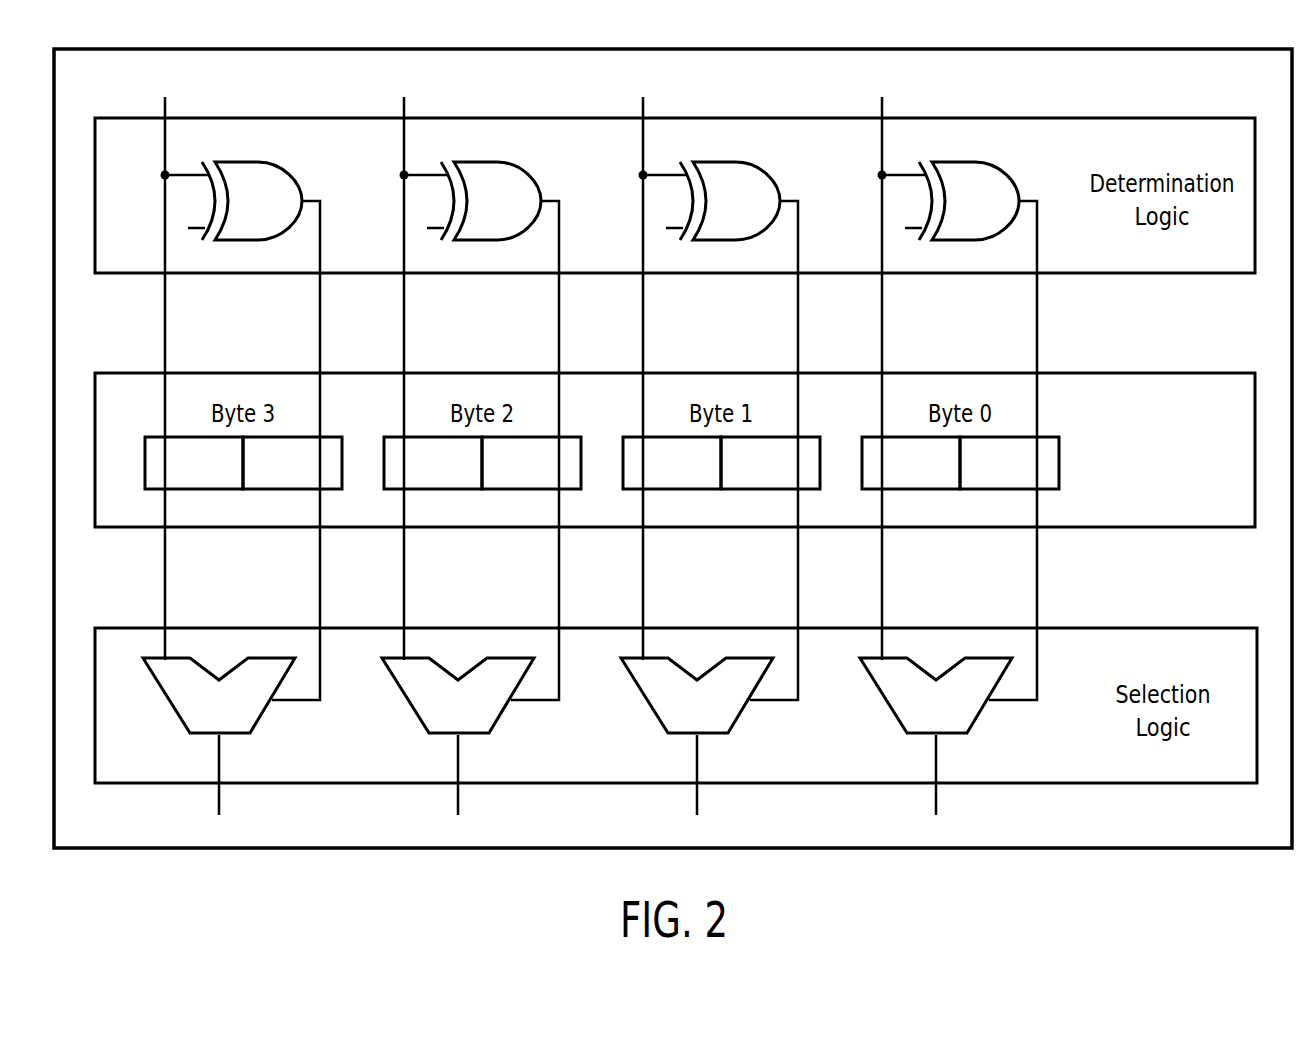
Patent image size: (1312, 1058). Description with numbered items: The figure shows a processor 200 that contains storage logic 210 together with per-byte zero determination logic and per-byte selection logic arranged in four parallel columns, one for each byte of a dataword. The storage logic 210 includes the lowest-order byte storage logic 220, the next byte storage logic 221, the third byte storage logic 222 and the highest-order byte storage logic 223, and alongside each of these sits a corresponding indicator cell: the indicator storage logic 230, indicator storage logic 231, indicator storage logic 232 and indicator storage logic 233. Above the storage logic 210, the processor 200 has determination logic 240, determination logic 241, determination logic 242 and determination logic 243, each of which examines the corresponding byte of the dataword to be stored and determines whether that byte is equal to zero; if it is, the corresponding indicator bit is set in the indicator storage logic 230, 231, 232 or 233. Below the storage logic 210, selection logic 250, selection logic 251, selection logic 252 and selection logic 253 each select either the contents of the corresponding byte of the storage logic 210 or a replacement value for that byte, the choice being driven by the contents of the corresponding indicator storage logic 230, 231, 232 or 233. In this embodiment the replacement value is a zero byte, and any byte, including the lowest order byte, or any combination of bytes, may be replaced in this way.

The processor 200 is at (1207, 901).
The storage logic 210 is at (1144, 500).
The byte-0 storage logic 220 is at (891, 477).
The byte-1 storage logic 221 is at (652, 477).
The byte-2 storage logic 222 is at (413, 477).
The byte-3 storage logic 223 is at (174, 477).
The byte-0 indicator storage logic 230 is at (988, 477).
The byte-1 indicator storage logic 231 is at (749, 477).
The byte-2 indicator storage logic 232 is at (510, 477).
The byte-3 indicator storage logic 233 is at (271, 477).
The byte-0 determination logic 240 is at (957, 213).
The byte-1 determination logic 241 is at (718, 213).
The byte-2 determination logic 242 is at (479, 213).
The byte-3 determination logic 243 is at (240, 213).
The byte-0 selection logic 250 is at (917, 715).
The byte-1 selection logic 251 is at (678, 715).
The byte-2 selection logic 252 is at (439, 715).
The byte-3 selection logic 253 is at (200, 715).